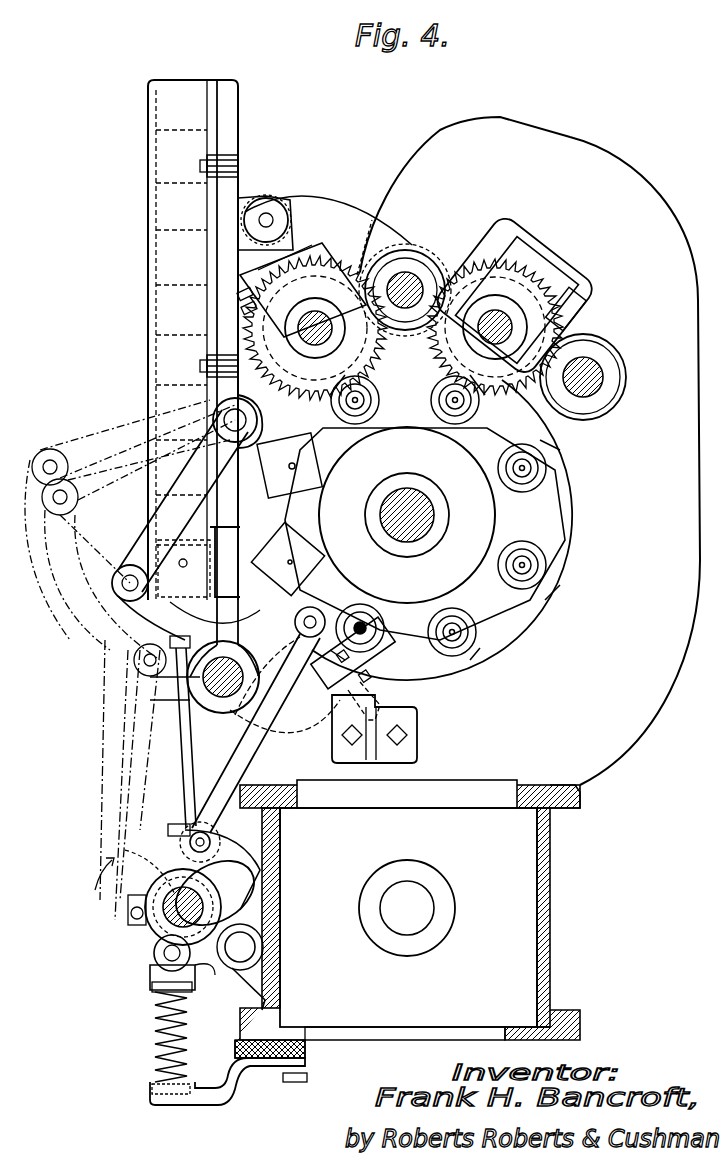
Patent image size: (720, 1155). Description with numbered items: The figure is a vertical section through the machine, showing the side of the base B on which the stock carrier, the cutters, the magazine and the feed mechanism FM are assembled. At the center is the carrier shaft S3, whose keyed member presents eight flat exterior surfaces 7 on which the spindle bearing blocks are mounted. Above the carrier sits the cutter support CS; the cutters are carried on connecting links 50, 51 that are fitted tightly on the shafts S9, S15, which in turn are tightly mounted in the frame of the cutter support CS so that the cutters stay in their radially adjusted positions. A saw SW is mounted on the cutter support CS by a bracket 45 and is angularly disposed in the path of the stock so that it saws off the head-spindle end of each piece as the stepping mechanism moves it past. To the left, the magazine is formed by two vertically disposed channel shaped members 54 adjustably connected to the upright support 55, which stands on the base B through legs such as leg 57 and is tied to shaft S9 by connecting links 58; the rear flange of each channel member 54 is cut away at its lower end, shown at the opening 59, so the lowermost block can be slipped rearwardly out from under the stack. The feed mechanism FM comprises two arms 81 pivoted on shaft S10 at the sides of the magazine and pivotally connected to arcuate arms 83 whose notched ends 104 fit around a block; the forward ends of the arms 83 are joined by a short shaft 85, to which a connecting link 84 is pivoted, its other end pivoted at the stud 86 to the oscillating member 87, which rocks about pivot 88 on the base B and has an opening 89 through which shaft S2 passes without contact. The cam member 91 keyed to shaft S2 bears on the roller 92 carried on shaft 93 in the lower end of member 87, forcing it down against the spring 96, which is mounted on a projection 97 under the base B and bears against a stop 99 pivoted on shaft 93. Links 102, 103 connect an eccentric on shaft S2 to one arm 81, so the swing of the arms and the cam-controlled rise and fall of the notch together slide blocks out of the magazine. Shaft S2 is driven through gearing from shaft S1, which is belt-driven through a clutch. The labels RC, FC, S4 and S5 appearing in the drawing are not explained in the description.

The channel shaped member 54 is at (186, 95).
The upright support 55 is at (223, 133).
The connecting link 51 is at (283, 252).
The connecting link 58 is at (330, 193).
The cutter support CS is at (567, 148).
The rack clutch RC is at (301, 315).
The shaft S4 is at (313, 320).
The shaft S9 is at (407, 284).
The feed clutch FC is at (514, 300).
The shaft S5 is at (495, 327).
The connecting link 50 is at (565, 285).
The shaft S15 is at (592, 372).
The flat exterior surface 7 is at (528, 524).
The shaft S3 is at (418, 505).
The shaft S10 is at (230, 410).
The arm 81 is at (125, 565).
The link 103 is at (138, 540).
The opening 59 is at (230, 535).
The leg 57 is at (228, 592).
The notched end 104 is at (221, 610).
The arcuate arm 83 is at (195, 635).
The short shaft 85 is at (309, 640).
The connecting link 84 is at (246, 748).
The pivot 86 is at (200, 838).
The link 102 is at (170, 728).
The feed mechanism FM is at (94, 760).
The saw SW is at (395, 672).
The bracket 45 is at (405, 755).
The base B is at (553, 948).
The shaft S1 is at (407, 908).
The opening 89 is at (237, 862).
The oscillating member 87 is at (250, 875).
The shaft S2 is at (165, 905).
The cam member 91 is at (140, 870).
The shaft 93 is at (156, 955).
The pivot 88 is at (245, 947).
The roller 92 is at (185, 979).
The stop 99 is at (152, 986).
The spring 96 is at (157, 1030).
The projection 97 is at (218, 1100).